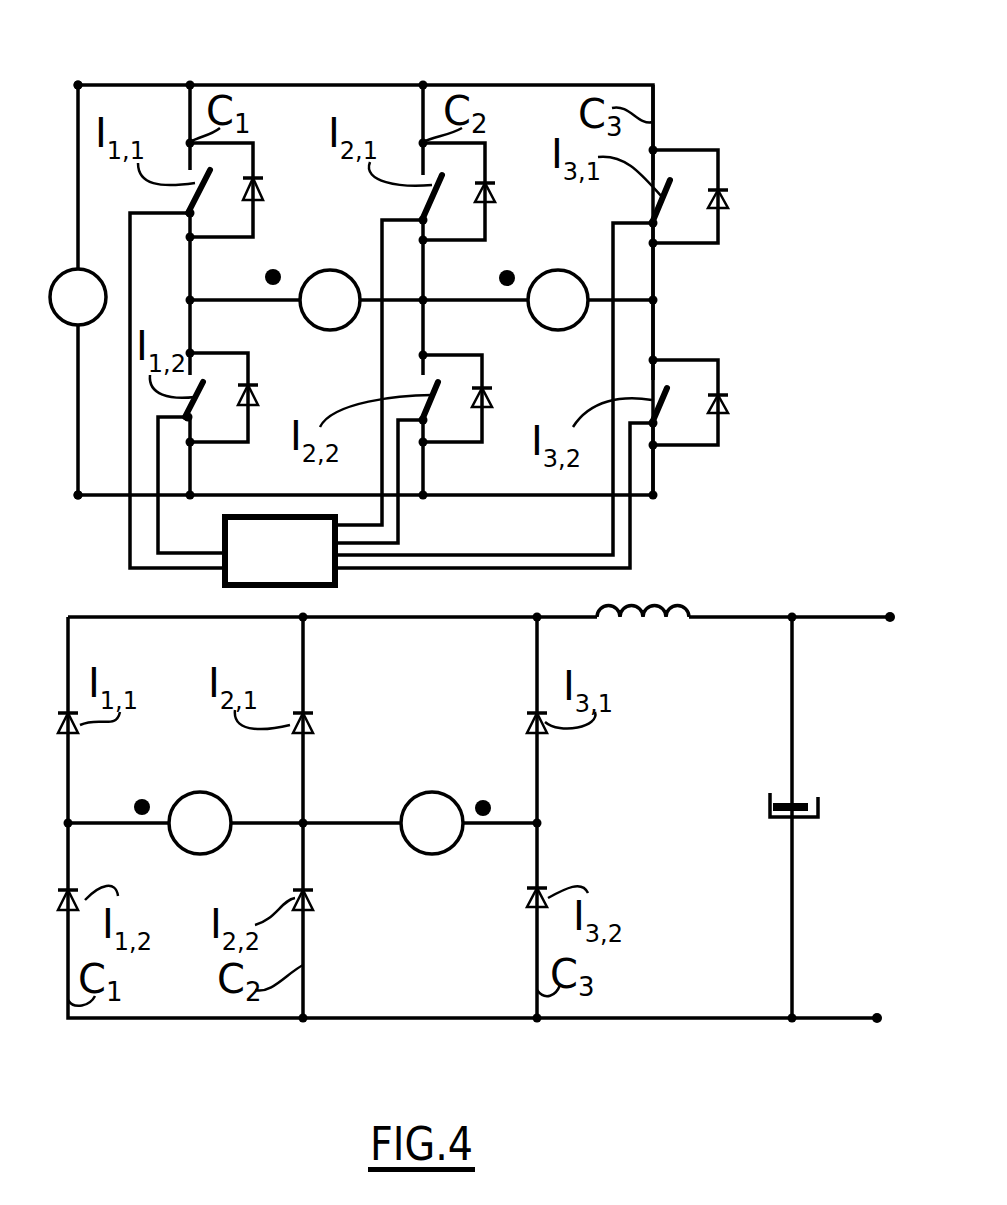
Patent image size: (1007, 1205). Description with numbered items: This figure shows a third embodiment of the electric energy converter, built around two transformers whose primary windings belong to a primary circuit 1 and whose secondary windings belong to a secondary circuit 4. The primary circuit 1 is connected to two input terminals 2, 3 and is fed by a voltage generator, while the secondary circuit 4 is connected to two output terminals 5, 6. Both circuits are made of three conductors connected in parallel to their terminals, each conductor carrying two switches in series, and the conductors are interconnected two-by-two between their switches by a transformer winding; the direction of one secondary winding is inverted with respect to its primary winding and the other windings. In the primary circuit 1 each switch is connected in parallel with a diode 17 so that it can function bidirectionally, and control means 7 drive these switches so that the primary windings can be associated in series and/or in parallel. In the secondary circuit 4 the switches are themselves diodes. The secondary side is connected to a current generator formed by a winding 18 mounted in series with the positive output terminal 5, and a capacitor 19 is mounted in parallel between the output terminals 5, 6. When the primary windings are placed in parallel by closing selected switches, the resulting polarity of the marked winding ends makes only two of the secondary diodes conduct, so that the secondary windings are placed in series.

The primary circuit 1 is at (737, 128).
The input terminal 2 is at (78, 85).
The input terminal 3 is at (80, 498).
The secondary circuit 4 is at (768, 612).
The output terminal 5 is at (890, 614).
The output terminal 6 is at (877, 1021).
The control means 7 is at (280, 551).
The diode 17 is at (509, 298).
The winding 18 is at (660, 606).
The capacitor 19 is at (808, 807).